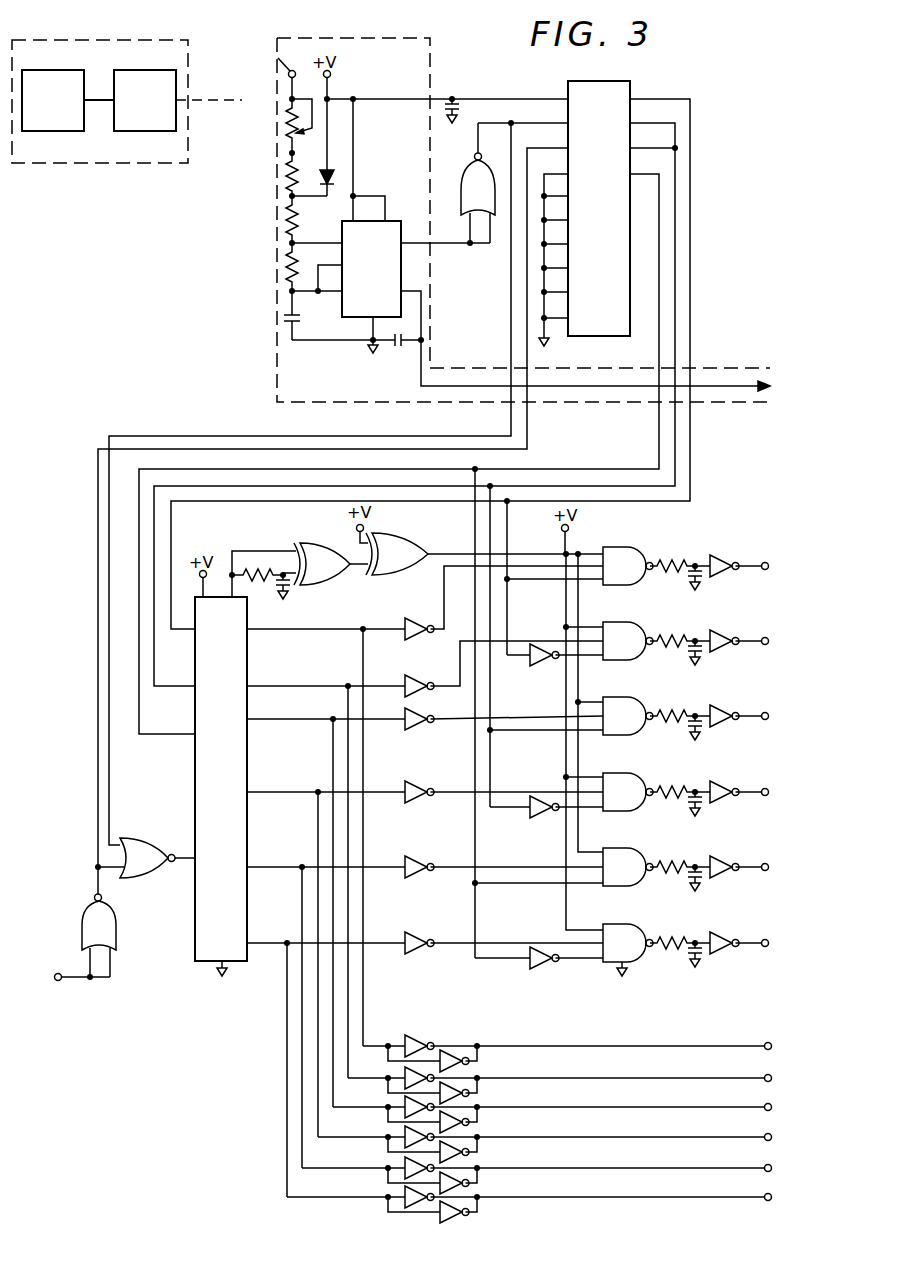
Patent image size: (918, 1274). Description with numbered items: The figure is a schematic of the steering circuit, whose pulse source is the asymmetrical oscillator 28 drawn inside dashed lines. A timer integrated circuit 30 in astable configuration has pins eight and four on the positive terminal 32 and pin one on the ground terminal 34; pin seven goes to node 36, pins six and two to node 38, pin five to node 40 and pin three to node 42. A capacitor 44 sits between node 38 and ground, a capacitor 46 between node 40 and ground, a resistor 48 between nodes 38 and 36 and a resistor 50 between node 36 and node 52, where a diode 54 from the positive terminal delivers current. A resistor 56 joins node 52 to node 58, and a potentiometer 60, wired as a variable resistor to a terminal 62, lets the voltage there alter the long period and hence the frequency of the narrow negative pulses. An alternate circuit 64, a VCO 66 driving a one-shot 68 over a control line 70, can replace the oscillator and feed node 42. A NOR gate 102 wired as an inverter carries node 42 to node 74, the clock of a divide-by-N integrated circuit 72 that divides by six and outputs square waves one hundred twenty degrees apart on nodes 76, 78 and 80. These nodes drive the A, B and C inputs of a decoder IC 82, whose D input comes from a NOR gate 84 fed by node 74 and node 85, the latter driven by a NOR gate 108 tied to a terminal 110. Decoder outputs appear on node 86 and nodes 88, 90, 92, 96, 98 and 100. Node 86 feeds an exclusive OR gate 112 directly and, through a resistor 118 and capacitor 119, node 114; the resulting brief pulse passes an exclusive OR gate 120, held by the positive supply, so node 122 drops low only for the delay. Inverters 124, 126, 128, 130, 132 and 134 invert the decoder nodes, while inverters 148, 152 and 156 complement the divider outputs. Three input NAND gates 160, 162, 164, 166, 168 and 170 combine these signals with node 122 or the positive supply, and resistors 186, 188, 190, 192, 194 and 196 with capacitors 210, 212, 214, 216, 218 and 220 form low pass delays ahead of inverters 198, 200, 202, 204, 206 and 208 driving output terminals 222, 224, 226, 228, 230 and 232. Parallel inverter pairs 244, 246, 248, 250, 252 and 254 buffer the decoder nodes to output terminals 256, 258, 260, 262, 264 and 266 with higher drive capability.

The circuit 64 is at (187, 45).
The VCO 66 is at (46, 73).
The one-shot 68 is at (150, 73).
The control line 70 is at (96, 103).
The terminal 62 is at (270, 73).
The potentiometer 60 is at (284, 133).
The node 58 is at (287, 153).
The resistor 56 is at (287, 180).
The node 52 is at (287, 196).
The resistor 50 is at (287, 222).
The node 36 is at (287, 243).
The resistor 48 is at (287, 270).
The node 38 is at (287, 291).
The positive terminal 32 is at (366, 99).
The diode 54 is at (334, 179).
The integrated circuit 30 is at (386, 266).
The capacitor 44 is at (299, 322).
The ground terminal 34 is at (368, 344).
The capacitor 46 is at (398, 348).
The node 40 is at (425, 341).
The node 42 is at (470, 247).
The NOR gate 102 is at (469, 180).
The node 74 is at (512, 125).
The divide-by-N integrated circuit 72 is at (622, 241).
The asymmetrical oscillator 28 is at (279, 381).
The node 80 is at (475, 462).
The node 78 is at (489, 488).
The node 76 is at (509, 506).
The node 86 is at (230, 566).
The resistor 118 is at (252, 566).
The node 114 is at (281, 568).
The exclusive OR gate 112 is at (318, 544).
The capacitor 119 is at (290, 596).
The exclusive OR gate 120 is at (400, 534).
The node 122 is at (580, 552).
The inverter 124 is at (414, 619).
The inverter 126 is at (413, 676).
The inverter 128 is at (408, 712).
The inverter 130 is at (412, 783).
The inverter 132 is at (412, 858).
The inverter 134 is at (412, 934).
The node 88 is at (360, 626).
The node 90 is at (345, 684).
The node 92 is at (330, 717).
The node 96 is at (316, 789).
The node 98 is at (302, 865).
The node 100 is at (282, 950).
The decoder IC 82 is at (236, 777).
The NOR gate 84 is at (148, 841).
The node 85 is at (94, 867).
The NOR gate 108 is at (118, 925).
The terminal 110 is at (58, 981).
The inverter 148 is at (540, 666).
The inverter 152 is at (540, 820).
The inverter 156 is at (531, 970).
The three input NAND gate 160 is at (614, 549).
The three input NAND gate 162 is at (623, 623).
The three input NAND gate 164 is at (623, 698).
The three input NAND gate 166 is at (623, 774).
The three input NAND gate 168 is at (623, 850).
The three input NAND gate 170 is at (623, 926).
The resistor 186 is at (668, 561).
The resistor 188 is at (670, 637).
The resistor 190 is at (670, 712).
The resistor 192 is at (670, 788).
The resistor 194 is at (670, 863).
The resistor 196 is at (670, 939).
The inverter 198 is at (724, 576).
The inverter 200 is at (725, 650).
The inverter 202 is at (725, 725).
The inverter 204 is at (725, 801).
The inverter 206 is at (725, 876).
The inverter 208 is at (725, 952).
The capacitor 210 is at (688, 586).
The capacitor 212 is at (688, 662).
The capacitor 214 is at (688, 737).
The capacitor 216 is at (688, 813).
The capacitor 218 is at (688, 888).
The capacitor 220 is at (688, 964).
The output terminal 222 is at (775, 565).
The output terminal 224 is at (767, 637).
The output terminal 226 is at (767, 712).
The output terminal 228 is at (767, 788).
The output terminal 230 is at (767, 863).
The output terminal 232 is at (767, 939).
The inverter pair 244 is at (481, 1062).
The inverter pair 246 is at (481, 1094).
The inverter pair 248 is at (481, 1123).
The inverter pair 250 is at (481, 1153).
The inverter pair 252 is at (481, 1184).
The inverter pair 254 is at (481, 1213).
The output terminal 256 is at (771, 1049).
The output terminal 258 is at (771, 1081).
The output terminal 260 is at (771, 1110).
The output terminal 262 is at (771, 1140).
The output terminal 264 is at (771, 1171).
The output terminal 266 is at (771, 1200).